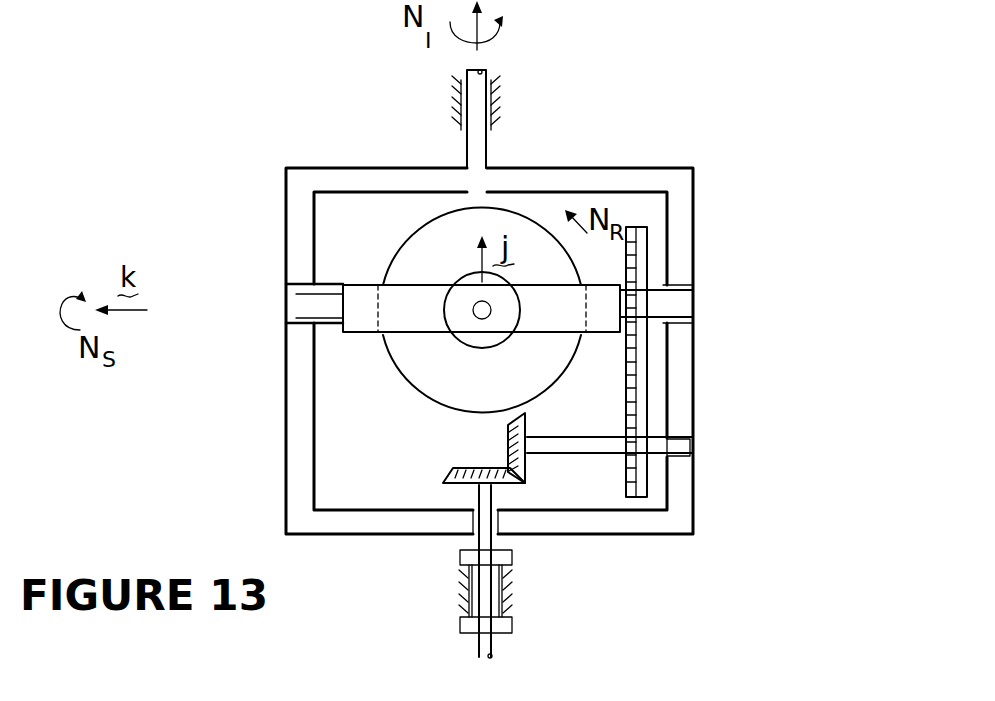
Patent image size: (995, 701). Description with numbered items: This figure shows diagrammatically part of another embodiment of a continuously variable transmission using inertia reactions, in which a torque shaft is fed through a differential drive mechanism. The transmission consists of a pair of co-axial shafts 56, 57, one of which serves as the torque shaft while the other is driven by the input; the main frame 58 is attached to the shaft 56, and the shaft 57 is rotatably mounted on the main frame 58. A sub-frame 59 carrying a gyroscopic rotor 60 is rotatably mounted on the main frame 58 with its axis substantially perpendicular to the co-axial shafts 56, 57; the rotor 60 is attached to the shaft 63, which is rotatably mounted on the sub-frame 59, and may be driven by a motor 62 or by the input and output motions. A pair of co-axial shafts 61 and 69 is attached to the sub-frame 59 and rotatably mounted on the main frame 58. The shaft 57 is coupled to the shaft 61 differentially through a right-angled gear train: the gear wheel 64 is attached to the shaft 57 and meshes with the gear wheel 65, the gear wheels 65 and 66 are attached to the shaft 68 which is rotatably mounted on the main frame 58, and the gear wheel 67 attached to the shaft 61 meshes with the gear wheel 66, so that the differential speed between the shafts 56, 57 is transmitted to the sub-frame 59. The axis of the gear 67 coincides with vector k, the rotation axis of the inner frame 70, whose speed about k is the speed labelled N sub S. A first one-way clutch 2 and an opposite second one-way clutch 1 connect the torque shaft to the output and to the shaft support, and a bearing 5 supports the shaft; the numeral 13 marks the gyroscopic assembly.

The co-axial shaft 56 is at (487, 70).
The bearing 5 is at (493, 97).
The main frame 58 is at (588, 168).
The inner frame 70 is at (362, 302).
The co-axial shaft 69 is at (287, 305).
The sub-frame 59 is at (343, 323).
The gyroscopic rotor 60 is at (372, 358).
The rotor shaft 63 is at (478, 305).
The motor 62 is at (381, 335).
The gyroscope 13 is at (453, 337).
The gear wheel 67 is at (647, 242).
The shaft 61 is at (680, 305).
The gear wheel 66 is at (640, 423).
The shaft 68 is at (682, 447).
The gear wheel 64 is at (520, 490).
The gear wheel 65 is at (527, 470).
The second one-way clutch 1 is at (512, 560).
The first one-way clutch 2 is at (512, 620).
The co-axial shaft 57 is at (470, 630).